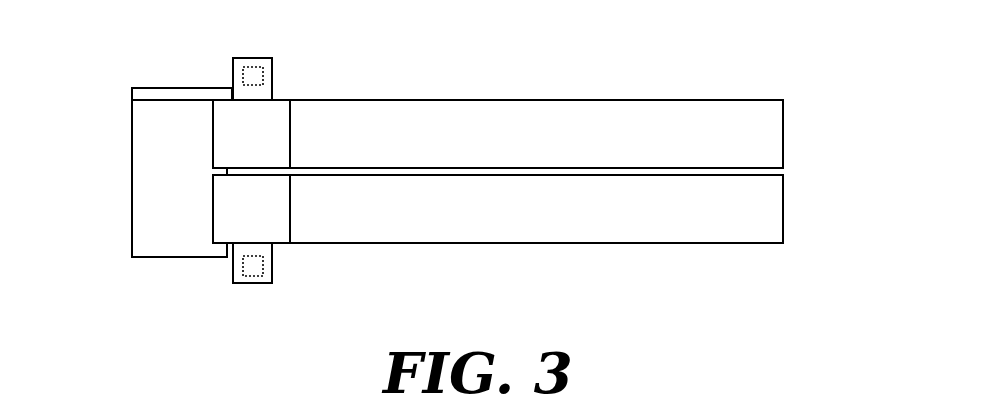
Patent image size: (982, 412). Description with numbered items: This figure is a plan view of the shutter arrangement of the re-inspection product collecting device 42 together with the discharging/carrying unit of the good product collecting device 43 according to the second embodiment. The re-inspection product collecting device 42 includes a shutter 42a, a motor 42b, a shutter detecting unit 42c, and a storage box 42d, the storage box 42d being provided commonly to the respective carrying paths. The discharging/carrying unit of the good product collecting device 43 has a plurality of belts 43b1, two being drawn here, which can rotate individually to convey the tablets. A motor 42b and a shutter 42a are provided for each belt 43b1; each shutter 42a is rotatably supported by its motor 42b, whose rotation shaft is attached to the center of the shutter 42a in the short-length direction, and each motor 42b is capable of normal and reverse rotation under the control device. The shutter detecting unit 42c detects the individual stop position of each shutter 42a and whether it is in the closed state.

The re-inspection product collecting device 42 is at (112, 264).
The shutter 42a is at (220, 137).
The motor 42b is at (258, 57).
The shutter detecting unit 42c is at (272, 70).
The storage box 42d is at (173, 257).
The good product collecting device 43 is at (826, 126).
The belt 43b1 is at (483, 108).